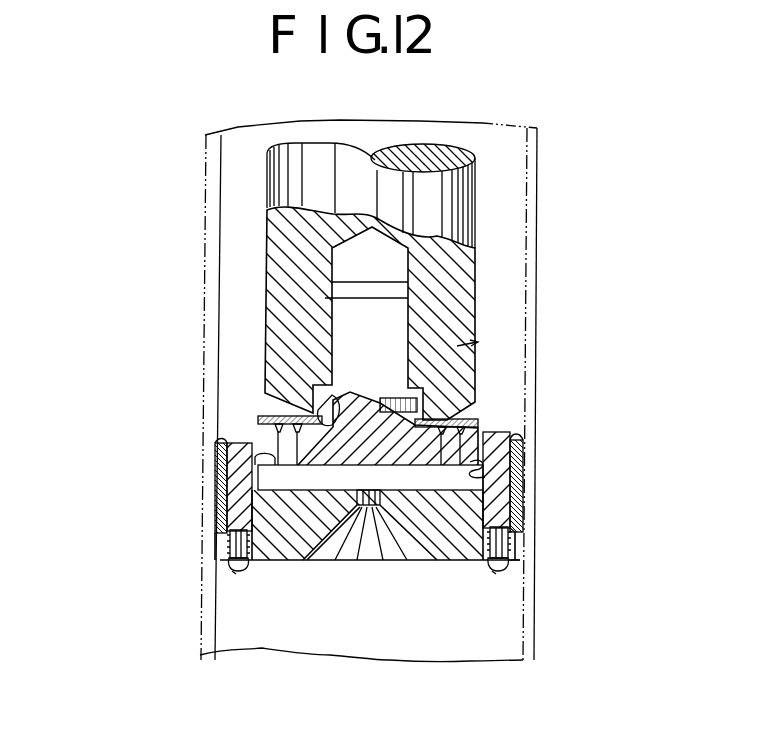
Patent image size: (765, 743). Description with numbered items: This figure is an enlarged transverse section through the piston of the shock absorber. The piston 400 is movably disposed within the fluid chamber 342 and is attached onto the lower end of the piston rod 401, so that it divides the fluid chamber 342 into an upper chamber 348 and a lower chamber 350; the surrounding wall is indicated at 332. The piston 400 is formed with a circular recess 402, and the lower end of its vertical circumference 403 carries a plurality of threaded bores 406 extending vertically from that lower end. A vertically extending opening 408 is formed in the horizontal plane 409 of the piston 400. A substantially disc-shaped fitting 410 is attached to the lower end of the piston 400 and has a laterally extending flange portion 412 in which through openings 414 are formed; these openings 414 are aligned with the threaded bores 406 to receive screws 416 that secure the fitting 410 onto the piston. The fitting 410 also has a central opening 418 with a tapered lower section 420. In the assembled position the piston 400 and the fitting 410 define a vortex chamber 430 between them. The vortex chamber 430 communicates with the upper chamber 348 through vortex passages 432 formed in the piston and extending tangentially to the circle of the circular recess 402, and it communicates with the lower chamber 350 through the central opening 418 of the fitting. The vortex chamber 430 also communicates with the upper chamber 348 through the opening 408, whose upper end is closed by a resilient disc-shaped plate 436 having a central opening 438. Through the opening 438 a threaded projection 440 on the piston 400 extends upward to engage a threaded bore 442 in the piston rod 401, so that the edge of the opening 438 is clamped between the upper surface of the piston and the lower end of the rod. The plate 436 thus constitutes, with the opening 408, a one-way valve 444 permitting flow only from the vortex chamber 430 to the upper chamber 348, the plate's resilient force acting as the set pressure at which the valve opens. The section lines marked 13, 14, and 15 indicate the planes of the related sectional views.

The piston rod 401 is at (513, 163).
The housing wall 332 is at (548, 188).
The upper chamber 348 is at (240, 205).
The lower chamber 350 is at (217, 640).
The one-way valve 444 is at (405, 335).
The threaded projection 440 is at (347, 316).
The threaded bore 442 is at (415, 328).
The central opening 438 is at (316, 404).
The horizontal plane 409 is at (490, 329).
The resilient disc-shaped plate 436 is at (273, 413).
The piston 400 is at (493, 415).
The circular recess 402 is at (483, 490).
The fitting 410 is at (275, 562).
The central opening 418 is at (355, 562).
The tapered lower section 420 is at (417, 540).
The vertically extending opening 408 is at (280, 445).
The vortex passages 432 is at (233, 468).
The vortex chamber 430 is at (273, 457).
The threaded bore 406 is at (235, 552).
The through openings 414 is at (230, 570).
The flange portion 412 is at (522, 556).
The vertical circumference 403 is at (520, 553).
The screws 416 is at (232, 575).
The fluid chamber 342 is at (540, 300).
The section line 13- 13 is at (110, 309).
The section line 14- 14 is at (85, 477).
The section line 15- 15 is at (480, 347).